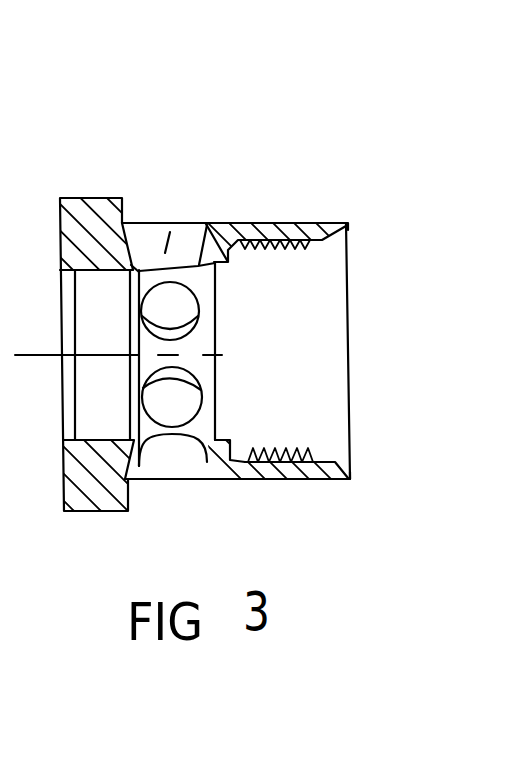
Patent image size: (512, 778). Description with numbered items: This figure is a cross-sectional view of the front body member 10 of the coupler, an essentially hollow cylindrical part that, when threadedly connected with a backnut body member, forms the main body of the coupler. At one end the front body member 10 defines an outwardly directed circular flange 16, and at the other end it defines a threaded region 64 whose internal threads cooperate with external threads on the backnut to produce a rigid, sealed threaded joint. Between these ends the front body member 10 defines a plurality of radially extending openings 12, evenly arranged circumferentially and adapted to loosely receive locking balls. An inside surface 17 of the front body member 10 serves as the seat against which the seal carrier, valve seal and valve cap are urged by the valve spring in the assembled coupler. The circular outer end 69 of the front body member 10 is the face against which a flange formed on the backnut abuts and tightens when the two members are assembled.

The front body member 10 is at (275, 112).
The radially extending openings 12 is at (163, 223).
The outwardly directed circular flange 16 is at (86, 208).
The inside surface 17 is at (131, 270).
The threaded region 64 is at (283, 255).
The circular outer end 69 is at (352, 223).